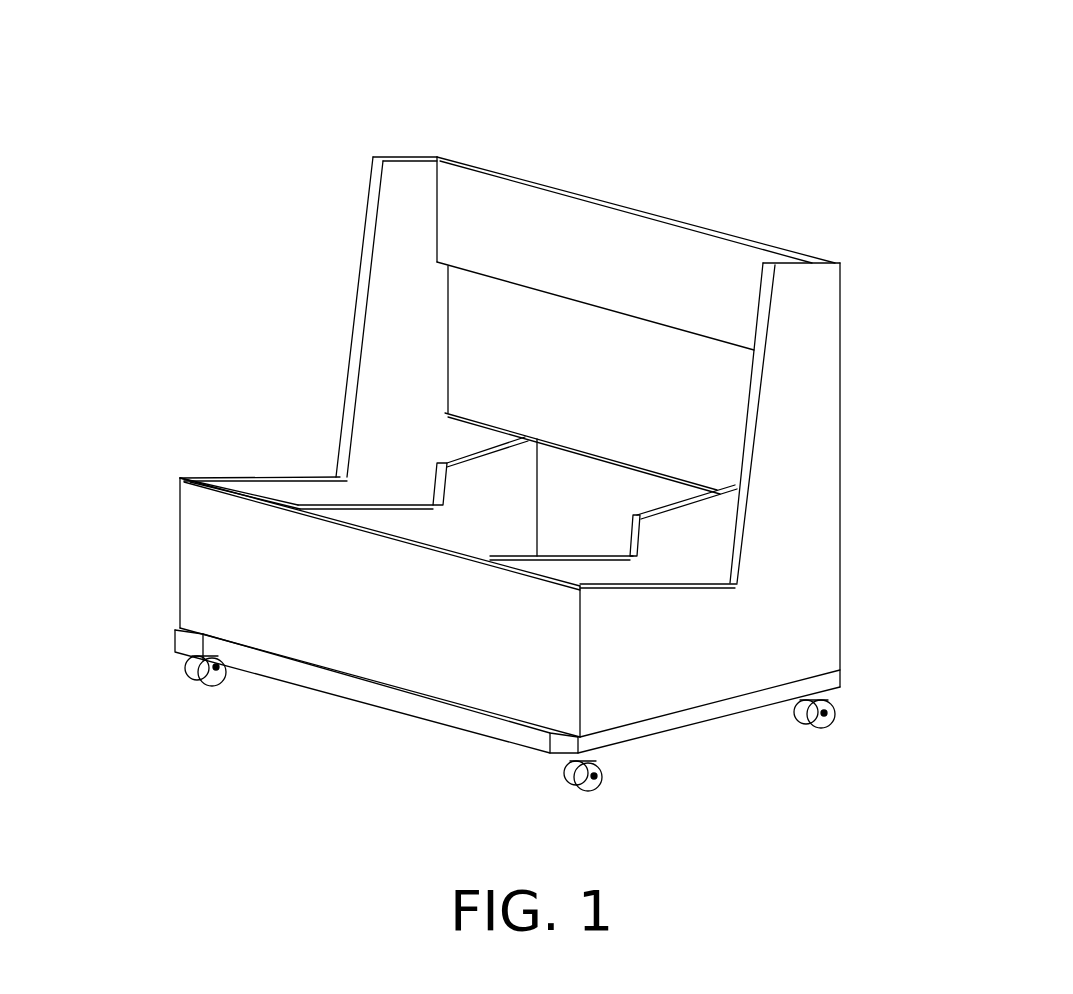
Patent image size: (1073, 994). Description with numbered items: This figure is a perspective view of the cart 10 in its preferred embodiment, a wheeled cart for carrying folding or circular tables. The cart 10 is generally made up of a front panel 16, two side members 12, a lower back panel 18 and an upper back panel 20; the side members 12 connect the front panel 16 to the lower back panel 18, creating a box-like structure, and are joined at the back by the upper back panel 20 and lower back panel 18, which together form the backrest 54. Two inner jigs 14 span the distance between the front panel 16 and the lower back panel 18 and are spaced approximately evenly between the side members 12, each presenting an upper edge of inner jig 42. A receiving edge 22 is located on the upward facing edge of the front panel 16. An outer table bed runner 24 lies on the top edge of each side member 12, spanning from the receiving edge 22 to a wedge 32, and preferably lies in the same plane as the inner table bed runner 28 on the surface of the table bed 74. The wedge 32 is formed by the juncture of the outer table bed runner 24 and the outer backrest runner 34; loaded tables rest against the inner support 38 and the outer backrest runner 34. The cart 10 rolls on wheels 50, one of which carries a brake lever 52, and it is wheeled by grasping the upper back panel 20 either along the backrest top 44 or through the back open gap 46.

The cart 10 is at (282, 178).
The side member 12 is at (622, 524).
The inner jig 14 is at (393, 418).
The front panel 16 is at (507, 631).
The lower back panel 18 is at (761, 463).
The upper back panel 20 is at (595, 216).
The receiving edge 22 is at (192, 538).
The outer table bed runner 24 is at (485, 593).
The inner table bed runner 28 is at (509, 609).
The wedge 32 is at (783, 539).
The outer backrest runner 34 is at (622, 422).
The inner support 38 is at (622, 472).
The upper edge of inner jig 42 is at (353, 339).
The backrest top 44 is at (604, 143).
The back open gap 46 is at (645, 300).
The wheel 50 is at (592, 724).
The brake lever 52 is at (585, 699).
The backrest 54 is at (900, 238).
The table bed 74 is at (225, 445).